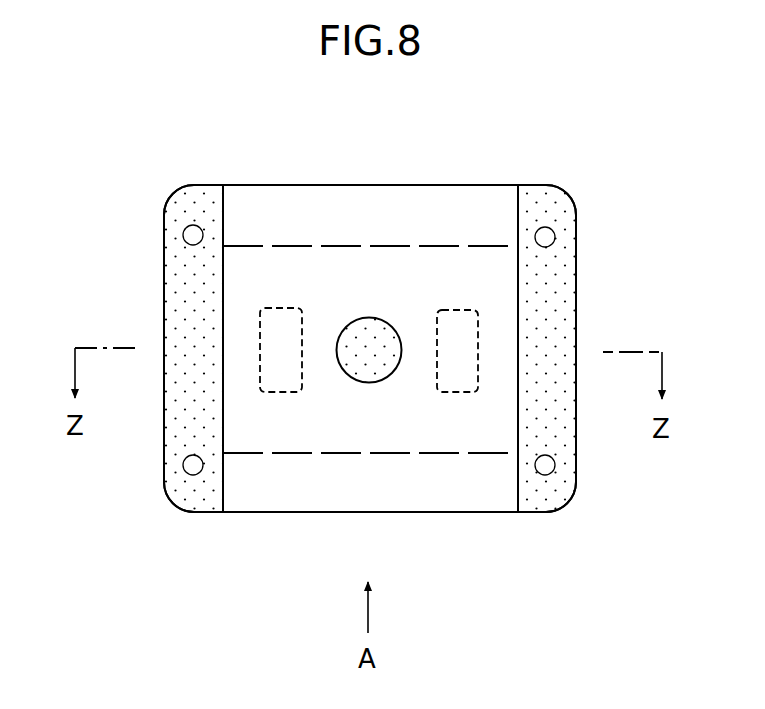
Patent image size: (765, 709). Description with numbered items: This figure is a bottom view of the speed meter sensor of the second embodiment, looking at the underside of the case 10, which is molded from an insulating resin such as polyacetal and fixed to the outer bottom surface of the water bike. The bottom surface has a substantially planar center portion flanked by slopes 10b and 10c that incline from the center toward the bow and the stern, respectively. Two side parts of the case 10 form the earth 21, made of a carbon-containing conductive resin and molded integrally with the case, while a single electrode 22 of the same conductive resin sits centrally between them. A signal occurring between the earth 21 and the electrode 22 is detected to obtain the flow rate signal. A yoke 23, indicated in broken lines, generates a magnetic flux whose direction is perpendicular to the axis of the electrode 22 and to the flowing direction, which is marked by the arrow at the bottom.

The case 10 is at (266, 492).
The slope 10b is at (460, 200).
The slope 10c is at (430, 500).
The earth 21 is at (180, 292).
The electrode 22 is at (369, 329).
The yoke 23 is at (280, 392).